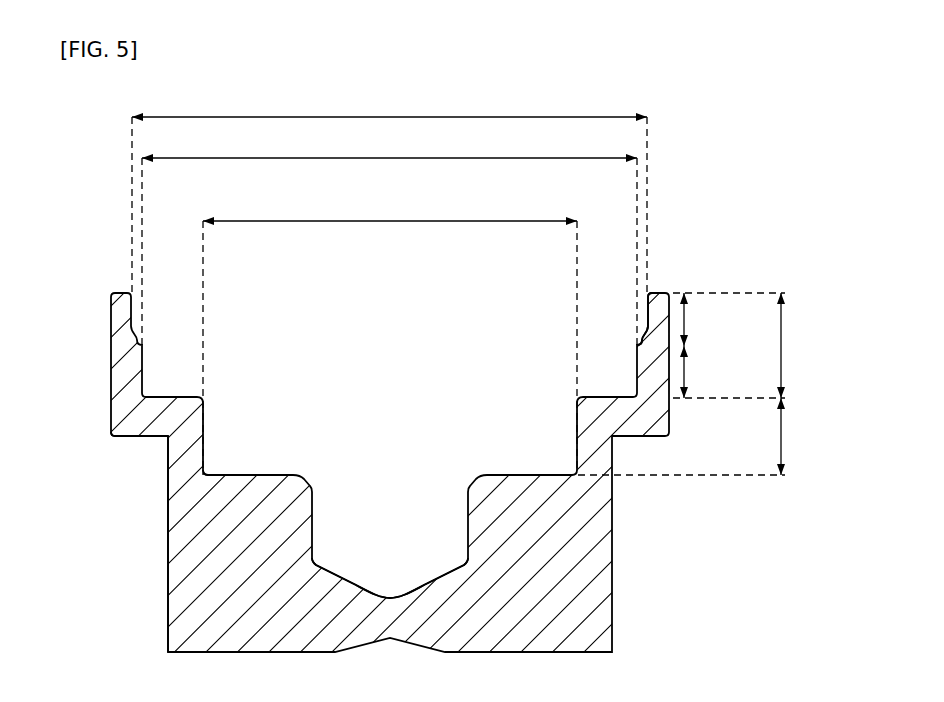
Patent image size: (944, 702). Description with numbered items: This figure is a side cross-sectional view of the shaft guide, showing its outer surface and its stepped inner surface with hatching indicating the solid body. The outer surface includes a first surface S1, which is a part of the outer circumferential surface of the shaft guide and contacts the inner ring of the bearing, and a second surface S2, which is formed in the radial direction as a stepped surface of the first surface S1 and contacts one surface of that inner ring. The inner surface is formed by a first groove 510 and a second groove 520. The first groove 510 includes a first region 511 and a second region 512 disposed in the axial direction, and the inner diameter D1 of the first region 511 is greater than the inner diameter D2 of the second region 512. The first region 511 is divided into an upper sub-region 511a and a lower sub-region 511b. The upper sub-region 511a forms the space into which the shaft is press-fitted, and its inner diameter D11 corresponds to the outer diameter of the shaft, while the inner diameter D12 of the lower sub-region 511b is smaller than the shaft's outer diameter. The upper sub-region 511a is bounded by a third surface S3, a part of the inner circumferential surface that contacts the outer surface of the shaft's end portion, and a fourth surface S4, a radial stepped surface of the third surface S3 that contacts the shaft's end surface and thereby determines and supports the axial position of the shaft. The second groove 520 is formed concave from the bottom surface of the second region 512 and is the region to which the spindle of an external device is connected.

The first groove 510 is at (273, 452).
The second groove 520 is at (410, 543).
The first region 511 is at (807, 345).
The 1-1 region 511a is at (719, 319).
The 1-2 region 511b is at (719, 372).
The second region 512 is at (807, 436).
The first surface S1 is at (168, 607).
The second surface S2 is at (128, 437).
The third surface S3 is at (646, 306).
The fourth surface S4 is at (641, 341).
The inner diameter of the first region D1 is at (389, 100).
The inner diameter of the 1-1 region D11 is at (389, 100).
The inner diameter of the 1-2 region D12 is at (389, 141).
The inner diameter of the second region D2 is at (390, 206).